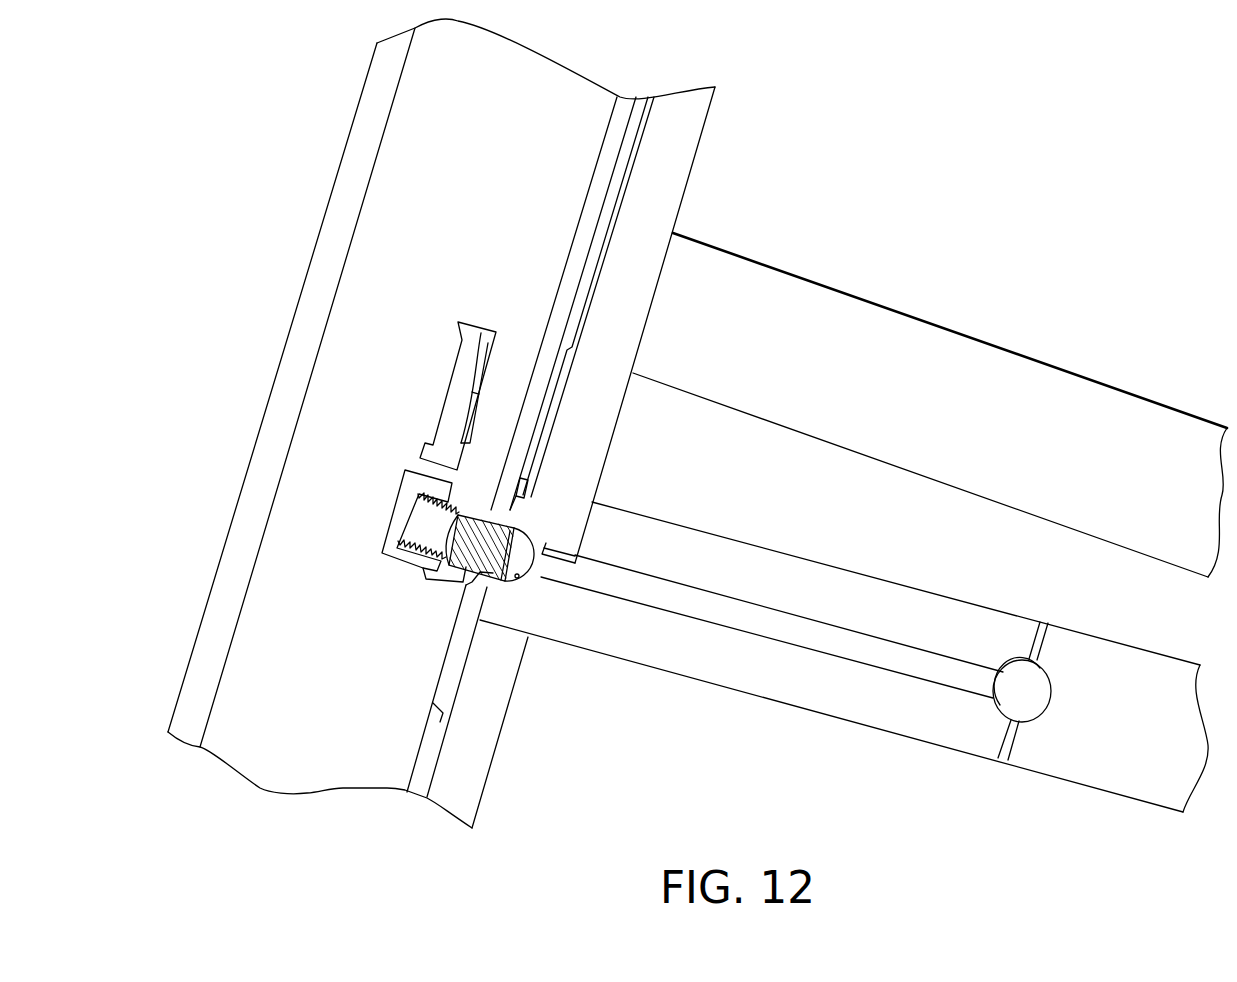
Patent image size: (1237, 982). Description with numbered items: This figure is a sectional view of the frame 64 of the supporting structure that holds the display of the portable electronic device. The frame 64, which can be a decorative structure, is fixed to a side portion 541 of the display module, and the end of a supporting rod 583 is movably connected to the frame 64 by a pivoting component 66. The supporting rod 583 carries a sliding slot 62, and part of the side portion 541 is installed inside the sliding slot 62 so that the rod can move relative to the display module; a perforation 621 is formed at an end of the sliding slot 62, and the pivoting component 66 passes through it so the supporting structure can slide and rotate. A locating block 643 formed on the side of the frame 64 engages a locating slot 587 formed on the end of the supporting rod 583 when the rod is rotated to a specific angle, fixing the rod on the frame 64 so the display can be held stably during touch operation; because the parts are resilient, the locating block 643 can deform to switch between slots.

The frame 64 is at (686, 148).
The locating block 643 is at (524, 488).
The locating slot 587 is at (520, 486).
The pivoting component 66 is at (447, 533).
The sliding slot 62 is at (713, 600).
The side portion 541 is at (490, 707).
The supporting rod 583 is at (1078, 763).
The perforation 621 is at (1018, 687).